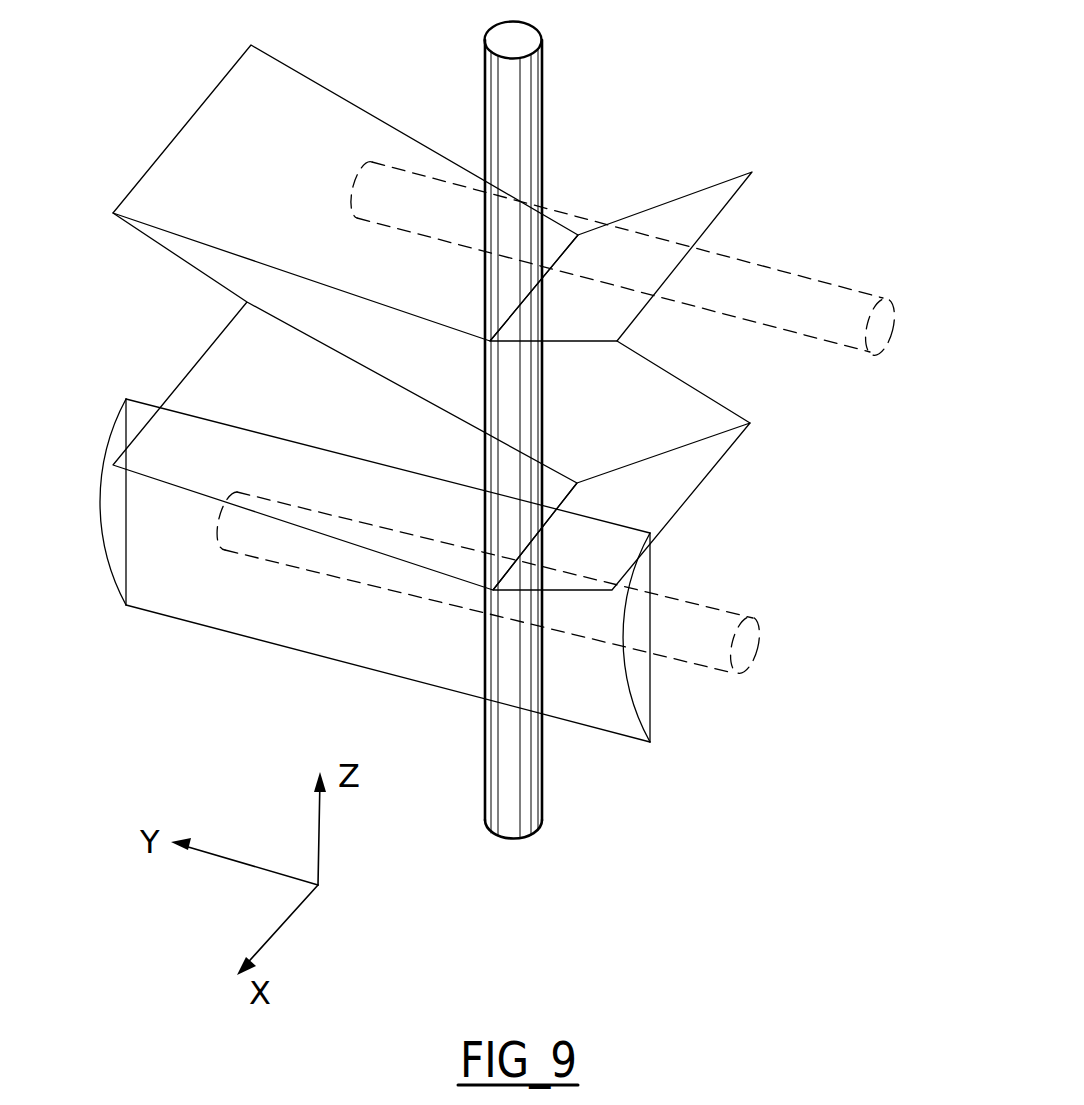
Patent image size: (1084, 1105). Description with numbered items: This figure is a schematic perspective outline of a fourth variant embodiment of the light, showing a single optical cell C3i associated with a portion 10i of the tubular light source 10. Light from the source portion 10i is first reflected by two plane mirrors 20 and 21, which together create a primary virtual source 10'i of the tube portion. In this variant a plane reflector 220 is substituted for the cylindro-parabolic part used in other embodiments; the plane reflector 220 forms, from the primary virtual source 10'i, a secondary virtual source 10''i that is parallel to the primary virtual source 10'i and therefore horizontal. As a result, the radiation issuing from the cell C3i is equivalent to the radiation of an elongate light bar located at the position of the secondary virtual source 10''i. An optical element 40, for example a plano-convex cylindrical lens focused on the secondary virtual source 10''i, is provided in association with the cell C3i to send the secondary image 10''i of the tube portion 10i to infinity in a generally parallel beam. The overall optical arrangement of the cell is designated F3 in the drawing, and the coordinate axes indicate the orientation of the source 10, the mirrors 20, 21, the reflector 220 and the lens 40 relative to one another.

The light source 10 is at (558, 430).
The plane mirror 20 is at (459, 317).
The plane mirror 21 is at (693, 463).
The plane reflector 220 is at (683, 395).
The optical element 40 is at (99, 545).
The light source portion 10i is at (530, 487).
The primary virtual source 10'i is at (498, 628).
The secondary virtual source 10''i is at (625, 260).
The optical function F3 is at (744, 115).
The cell C3i is at (888, 598).